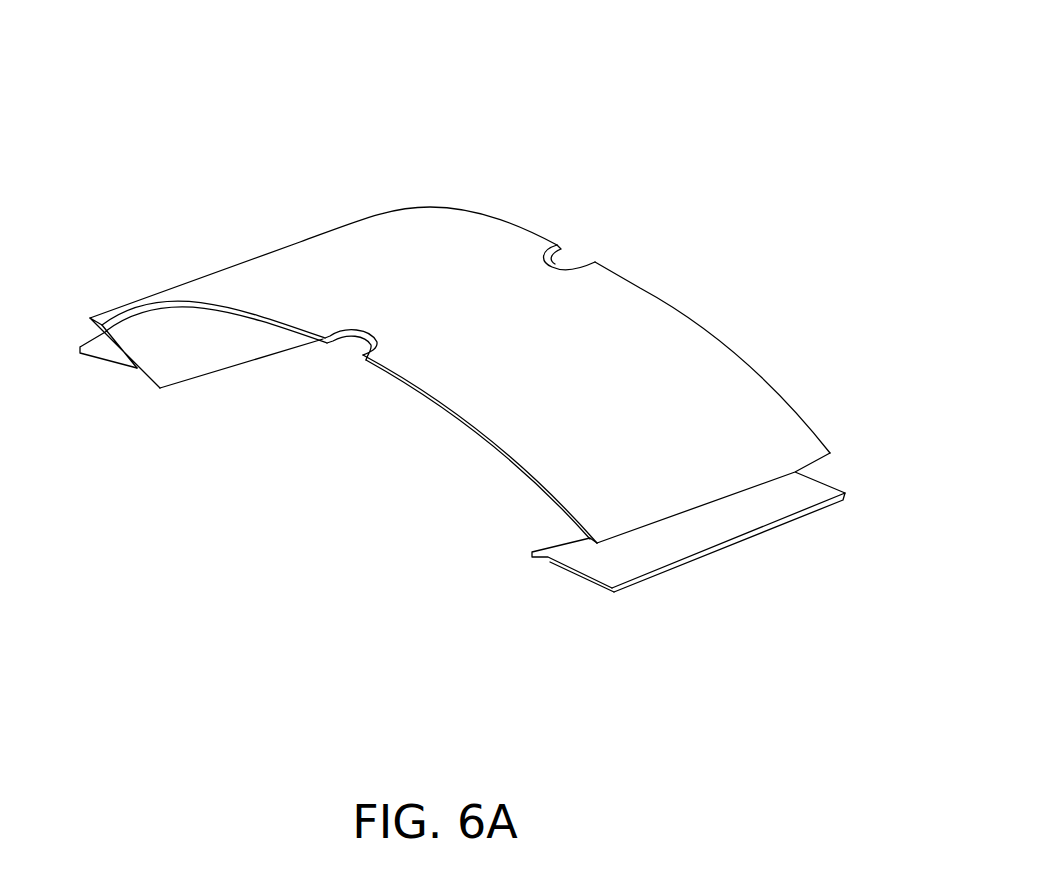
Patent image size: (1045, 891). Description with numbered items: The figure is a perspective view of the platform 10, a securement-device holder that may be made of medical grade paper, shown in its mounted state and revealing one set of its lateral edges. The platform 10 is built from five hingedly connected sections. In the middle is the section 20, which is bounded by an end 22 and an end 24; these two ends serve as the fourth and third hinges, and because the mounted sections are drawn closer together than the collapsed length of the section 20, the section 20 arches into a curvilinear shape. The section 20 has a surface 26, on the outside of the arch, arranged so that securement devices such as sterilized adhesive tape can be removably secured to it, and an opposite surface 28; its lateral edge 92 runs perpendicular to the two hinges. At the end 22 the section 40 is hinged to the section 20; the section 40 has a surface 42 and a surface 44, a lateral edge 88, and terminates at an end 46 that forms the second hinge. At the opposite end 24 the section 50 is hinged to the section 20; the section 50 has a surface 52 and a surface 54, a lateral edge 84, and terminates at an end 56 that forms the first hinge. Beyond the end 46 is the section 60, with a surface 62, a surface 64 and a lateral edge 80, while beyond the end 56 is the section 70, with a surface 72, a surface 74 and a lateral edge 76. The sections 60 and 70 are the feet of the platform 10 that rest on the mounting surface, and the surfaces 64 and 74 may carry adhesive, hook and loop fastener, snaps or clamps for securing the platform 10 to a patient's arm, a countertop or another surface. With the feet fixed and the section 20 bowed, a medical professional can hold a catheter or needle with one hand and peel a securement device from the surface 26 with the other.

The platform 10 is at (620, 105).
The section 20 is at (668, 242).
The end 22 is at (278, 246).
The end 24 is at (760, 480).
The surface 26 is at (707, 350).
The surface 28 is at (430, 398).
The section 40 is at (243, 370).
The surface 42 is at (187, 325).
The surface 44 is at (128, 325).
The end 46 is at (190, 380).
The section 50 is at (533, 547).
The surface 52 is at (565, 538).
The surface 54 is at (633, 580).
The end 56 is at (531, 556).
The section 60 is at (88, 364).
The surface 62 is at (92, 340).
The surface 64 is at (131, 376).
The section 70 is at (753, 553).
The surface 72 is at (779, 498).
The surface 74 is at (592, 589).
The lateral edge 76 is at (567, 572).
The lateral edge 80 is at (113, 361).
The lateral edge 84 is at (557, 567).
The lateral edge 88 is at (117, 343).
The lateral edge 92 is at (368, 362).